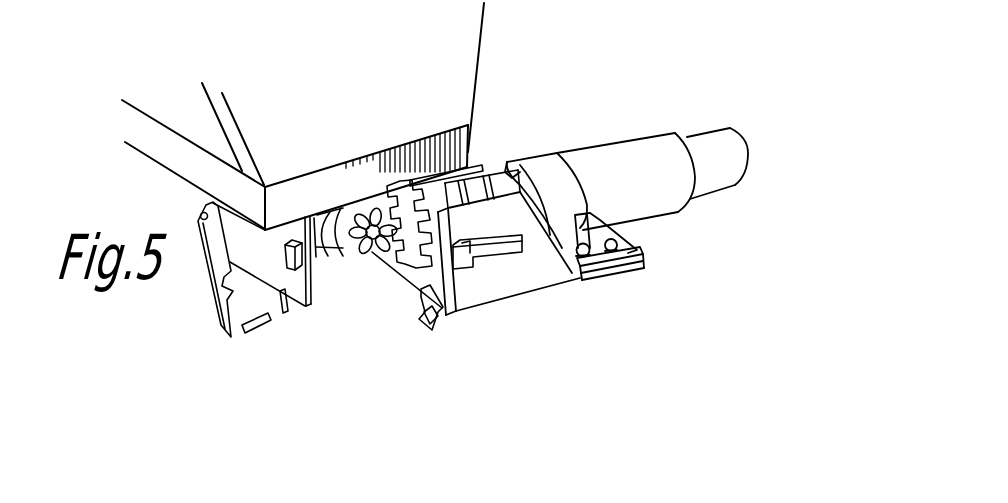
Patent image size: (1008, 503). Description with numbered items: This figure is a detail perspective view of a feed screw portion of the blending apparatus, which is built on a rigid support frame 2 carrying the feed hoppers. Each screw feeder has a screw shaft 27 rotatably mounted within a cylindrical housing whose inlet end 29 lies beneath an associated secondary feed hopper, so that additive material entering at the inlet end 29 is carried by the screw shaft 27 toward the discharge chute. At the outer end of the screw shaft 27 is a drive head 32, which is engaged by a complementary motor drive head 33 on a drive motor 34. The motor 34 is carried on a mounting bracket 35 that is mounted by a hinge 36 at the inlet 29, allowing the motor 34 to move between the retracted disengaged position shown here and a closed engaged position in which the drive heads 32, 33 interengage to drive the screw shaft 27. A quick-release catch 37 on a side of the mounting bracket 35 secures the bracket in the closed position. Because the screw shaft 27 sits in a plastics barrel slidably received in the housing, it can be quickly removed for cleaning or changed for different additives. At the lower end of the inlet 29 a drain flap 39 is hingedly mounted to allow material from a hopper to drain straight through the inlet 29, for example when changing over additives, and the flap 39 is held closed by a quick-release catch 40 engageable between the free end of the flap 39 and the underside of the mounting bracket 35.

The rigid support frame 2 is at (488, 62).
The screw shaft 27 is at (332, 262).
The inlet end 29 is at (258, 255).
The drive head 32 is at (366, 262).
The motor drive head 33 is at (430, 241).
The drive motor 34 is at (607, 160).
The mounting bracket 35 is at (540, 273).
The hinge 36 is at (412, 205).
The quick-release catch 37 is at (492, 268).
The drain flap 39 is at (205, 290).
The quick-release catch 40 is at (428, 333).